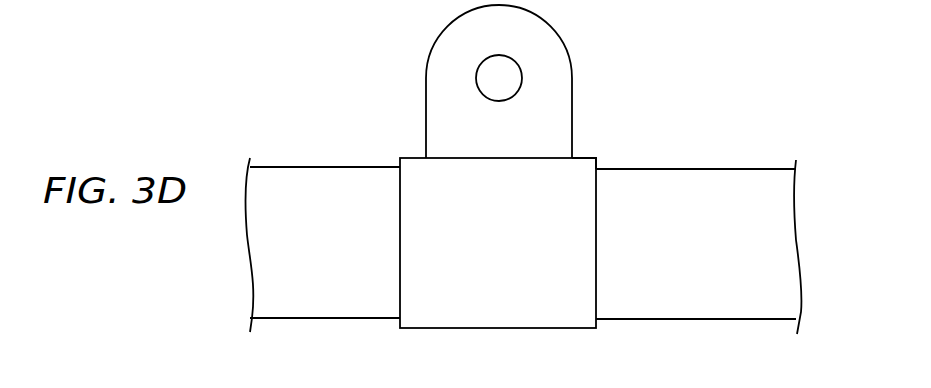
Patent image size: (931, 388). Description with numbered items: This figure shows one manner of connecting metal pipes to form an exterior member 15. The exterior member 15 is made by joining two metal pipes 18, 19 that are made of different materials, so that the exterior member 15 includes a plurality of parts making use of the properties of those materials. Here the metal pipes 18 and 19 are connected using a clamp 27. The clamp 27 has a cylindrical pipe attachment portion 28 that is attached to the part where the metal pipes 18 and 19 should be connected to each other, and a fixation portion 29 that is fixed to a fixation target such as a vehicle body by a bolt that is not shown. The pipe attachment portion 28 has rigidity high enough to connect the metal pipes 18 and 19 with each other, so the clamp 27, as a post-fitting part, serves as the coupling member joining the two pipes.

The exterior member 15 is at (762, 168).
The metal pipe 18 is at (282, 200).
The metal pipe 19 is at (683, 188).
The clamp 27 is at (589, 158).
The pipe attachment portion 28 is at (423, 172).
The fixation portion 29 is at (560, 58).